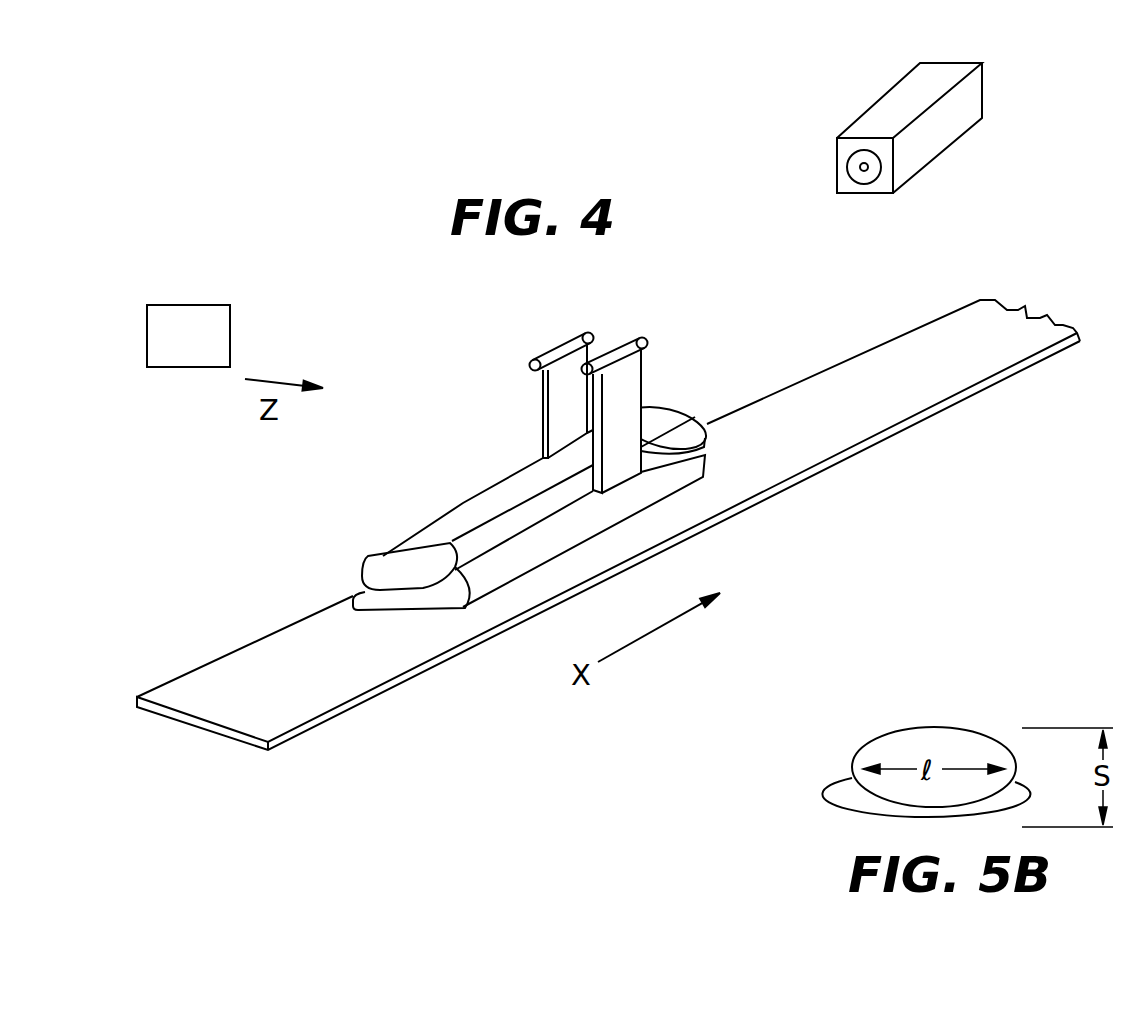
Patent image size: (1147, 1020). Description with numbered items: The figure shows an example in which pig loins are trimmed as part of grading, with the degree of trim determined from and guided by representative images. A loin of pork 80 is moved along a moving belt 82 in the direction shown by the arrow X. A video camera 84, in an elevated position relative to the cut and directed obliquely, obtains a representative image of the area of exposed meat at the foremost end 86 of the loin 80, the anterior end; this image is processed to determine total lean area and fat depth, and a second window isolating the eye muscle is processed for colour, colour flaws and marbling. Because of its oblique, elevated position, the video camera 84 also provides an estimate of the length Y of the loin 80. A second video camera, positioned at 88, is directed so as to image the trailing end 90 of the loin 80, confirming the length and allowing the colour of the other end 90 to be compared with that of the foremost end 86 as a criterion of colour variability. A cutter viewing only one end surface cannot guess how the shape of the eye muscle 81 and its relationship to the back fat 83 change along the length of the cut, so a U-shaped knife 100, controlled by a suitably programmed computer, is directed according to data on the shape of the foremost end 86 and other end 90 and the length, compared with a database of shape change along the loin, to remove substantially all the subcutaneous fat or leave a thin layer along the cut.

The loin of pork 80 is at (478, 545).
The eye muscle 81 is at (390, 578).
The moving belt 82 is at (1000, 342).
The back fat 83 is at (417, 598).
The video camera 84 is at (882, 122).
The foremost end 86 is at (712, 412).
The second video camera position 88 is at (188, 336).
The trailing end 90 is at (318, 596).
The U-shaped knife 100 is at (562, 345).